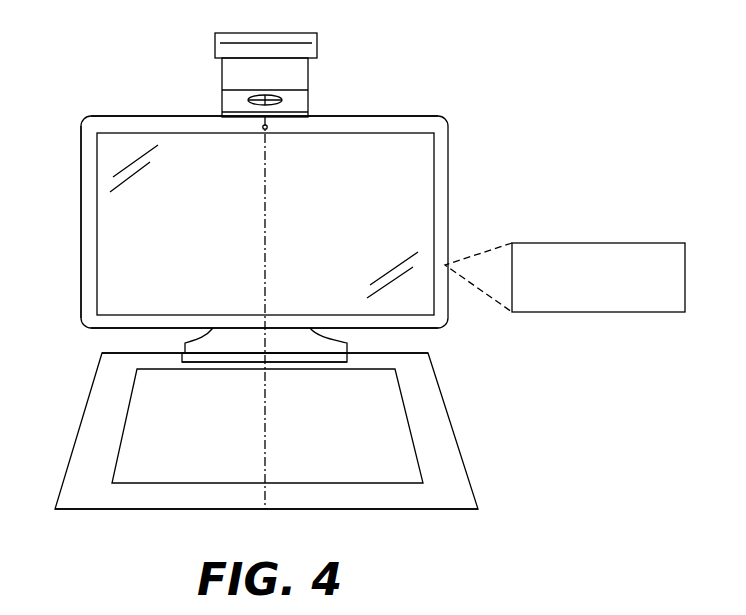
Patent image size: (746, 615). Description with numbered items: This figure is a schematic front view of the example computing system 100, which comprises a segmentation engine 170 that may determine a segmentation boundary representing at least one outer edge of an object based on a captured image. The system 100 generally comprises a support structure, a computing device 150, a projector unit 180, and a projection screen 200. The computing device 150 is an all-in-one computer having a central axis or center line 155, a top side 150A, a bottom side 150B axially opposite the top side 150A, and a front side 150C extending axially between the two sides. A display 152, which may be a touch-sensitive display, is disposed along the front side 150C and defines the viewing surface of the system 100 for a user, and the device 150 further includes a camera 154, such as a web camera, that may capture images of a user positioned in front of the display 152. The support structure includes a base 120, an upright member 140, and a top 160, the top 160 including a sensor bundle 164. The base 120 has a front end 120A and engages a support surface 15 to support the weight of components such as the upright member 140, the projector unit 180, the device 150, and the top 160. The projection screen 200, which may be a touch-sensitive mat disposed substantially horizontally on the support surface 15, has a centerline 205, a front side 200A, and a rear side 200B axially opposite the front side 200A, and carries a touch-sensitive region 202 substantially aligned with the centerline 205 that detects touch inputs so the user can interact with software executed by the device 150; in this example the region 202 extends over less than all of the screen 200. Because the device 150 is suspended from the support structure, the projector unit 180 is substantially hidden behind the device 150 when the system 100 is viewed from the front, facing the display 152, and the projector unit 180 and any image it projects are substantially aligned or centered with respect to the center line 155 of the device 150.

The computing system 100 is at (570, 144).
The computing device 150 is at (452, 198).
The display 152 is at (343, 192).
The top side 150A is at (363, 115).
The bottom side 150B is at (388, 328).
The front side 150C is at (100, 224).
The center line 155 is at (265, 160).
The camera 154 is at (267, 127).
The upright member 140 is at (220, 72).
The projector unit 180 is at (220, 110).
The top 160 is at (319, 31).
The sensor bundle 164 is at (257, 47).
The base 120 is at (178, 352).
The front end 120A is at (207, 365).
The projection screen 200 is at (432, 460).
The front side 200A is at (383, 510).
The rear side 200B is at (125, 353).
The touch-sensitive region 202 is at (398, 418).
The centerline 205 is at (265, 388).
The segmentation engine 170 is at (600, 312).
The support surface 15 is at (613, 440).